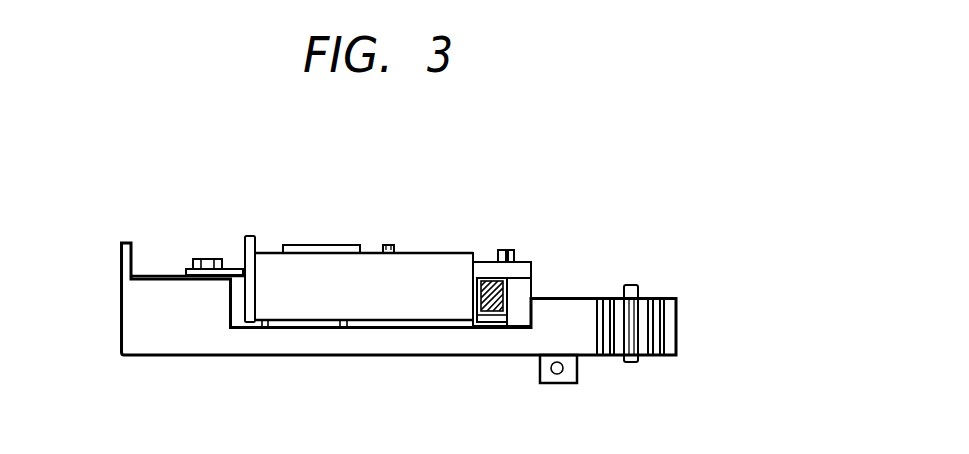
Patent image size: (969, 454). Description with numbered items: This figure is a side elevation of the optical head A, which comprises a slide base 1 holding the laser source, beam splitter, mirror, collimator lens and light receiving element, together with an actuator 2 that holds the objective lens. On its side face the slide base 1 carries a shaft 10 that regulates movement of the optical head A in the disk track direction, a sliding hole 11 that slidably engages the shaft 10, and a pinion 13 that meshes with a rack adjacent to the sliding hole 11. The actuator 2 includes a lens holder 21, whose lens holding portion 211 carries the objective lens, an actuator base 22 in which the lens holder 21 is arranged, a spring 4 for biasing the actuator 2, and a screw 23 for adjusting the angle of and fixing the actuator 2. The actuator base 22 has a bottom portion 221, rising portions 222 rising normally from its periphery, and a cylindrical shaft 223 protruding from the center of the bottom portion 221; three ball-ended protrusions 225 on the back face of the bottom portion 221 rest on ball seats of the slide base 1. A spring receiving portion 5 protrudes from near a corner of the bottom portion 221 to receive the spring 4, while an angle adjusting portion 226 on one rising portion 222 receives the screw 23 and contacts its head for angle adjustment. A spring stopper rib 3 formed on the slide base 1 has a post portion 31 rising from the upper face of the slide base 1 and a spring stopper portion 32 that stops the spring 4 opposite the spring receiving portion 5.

The optical head A is at (121, 121).
The slide base 1 is at (147, 275).
The actuator 2 is at (455, 246).
The spring stopper rib 3 is at (530, 258).
The spring 4 is at (495, 312).
The spring receiving portion 5 is at (483, 321).
The shaft 10 is at (563, 368).
The sliding hole 11 is at (560, 383).
The pinion 13 is at (643, 310).
The lens holder 21 is at (335, 250).
The actuator base 22 is at (412, 252).
The screw 23 is at (203, 259).
The post portion 31 is at (522, 288).
The spring stopper portion 32 is at (485, 268).
The lens holding portion 211 is at (297, 246).
The bottom portion 221 is at (415, 323).
The rising portions 222 is at (260, 252).
The cylindrical shaft 223 is at (387, 245).
The protrusions 225 is at (343, 327).
The angle adjusting portion 226 is at (198, 280).